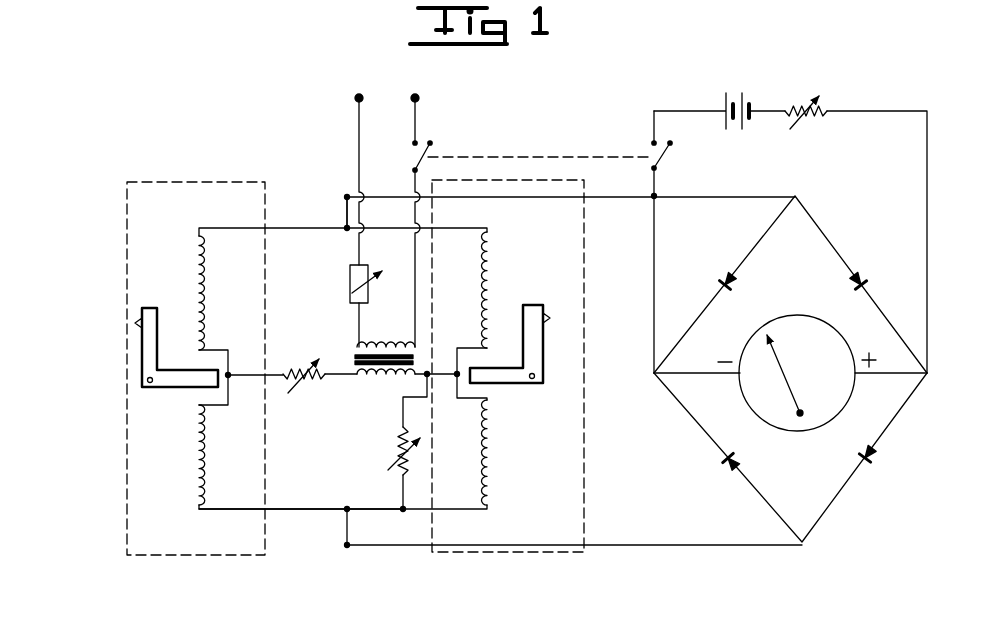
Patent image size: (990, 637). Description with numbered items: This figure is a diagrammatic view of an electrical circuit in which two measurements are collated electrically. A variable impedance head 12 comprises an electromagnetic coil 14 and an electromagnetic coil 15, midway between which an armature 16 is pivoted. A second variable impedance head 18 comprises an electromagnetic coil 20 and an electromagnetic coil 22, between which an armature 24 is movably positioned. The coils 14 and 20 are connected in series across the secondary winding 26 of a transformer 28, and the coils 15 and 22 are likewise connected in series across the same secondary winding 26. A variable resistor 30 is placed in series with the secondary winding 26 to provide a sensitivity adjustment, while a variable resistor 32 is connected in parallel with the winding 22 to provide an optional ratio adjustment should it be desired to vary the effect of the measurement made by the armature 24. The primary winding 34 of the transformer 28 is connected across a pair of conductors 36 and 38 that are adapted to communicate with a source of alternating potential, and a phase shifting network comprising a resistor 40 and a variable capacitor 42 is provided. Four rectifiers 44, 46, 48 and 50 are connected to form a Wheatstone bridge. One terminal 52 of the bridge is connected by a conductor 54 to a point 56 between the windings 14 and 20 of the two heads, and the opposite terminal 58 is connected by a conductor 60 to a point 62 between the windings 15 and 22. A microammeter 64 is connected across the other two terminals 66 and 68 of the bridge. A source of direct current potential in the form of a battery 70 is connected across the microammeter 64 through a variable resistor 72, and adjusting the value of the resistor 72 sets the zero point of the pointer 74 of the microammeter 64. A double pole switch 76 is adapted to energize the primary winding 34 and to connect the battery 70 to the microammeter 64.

The variable impedance head 12 is at (124, 458).
The electromagnetic coil 14 is at (209, 311).
The electromagnetic coil 15 is at (209, 462).
The armature 16 is at (183, 388).
The second variable impedance head 18 is at (587, 471).
The electromagnetic coil 20 is at (493, 290).
The electromagnetic coil 22 is at (492, 466).
The armature 24 is at (521, 385).
The secondary winding 26 is at (382, 379).
The transformer 28 is at (350, 356).
The variable resistor 30 is at (302, 383).
The variable resistor 32 is at (394, 447).
The primary winding 34 is at (376, 344).
The conductor 36 is at (361, 128).
The conductor 38 is at (418, 116).
The resistor 40 is at (350, 285).
The variable capacitor 42 is at (389, 276).
The rectifier 44 is at (733, 285).
The rectifier 46 is at (853, 286).
The rectifier 48 is at (741, 459).
The rectifier 50 is at (880, 457).
The terminal 52 is at (800, 198).
The conductor 54 is at (641, 200).
The point 56 is at (347, 230).
The terminal 58 is at (806, 543).
The conductor 60 is at (668, 547).
The point 62 is at (346, 508).
The microammeter 64 is at (812, 432).
The terminal 66 is at (652, 377).
The terminal 68 is at (930, 374).
The battery 70 is at (736, 92).
The variable resistor 72 is at (813, 122).
The pointer 74 is at (792, 365).
The double pole switch 76 is at (524, 157).